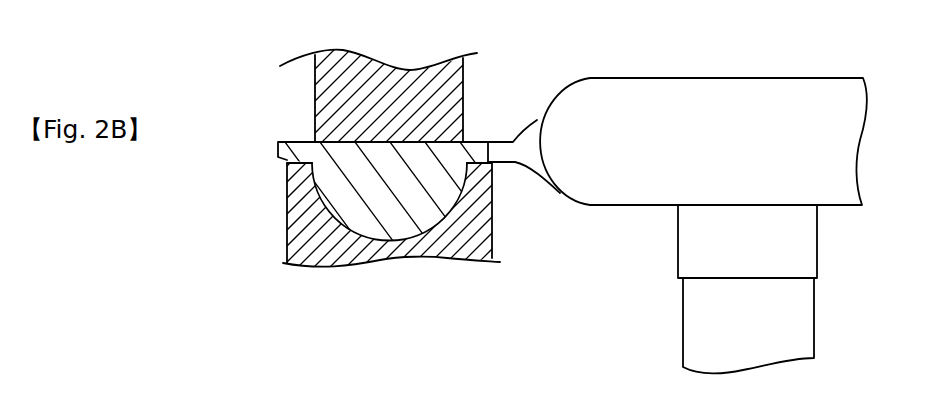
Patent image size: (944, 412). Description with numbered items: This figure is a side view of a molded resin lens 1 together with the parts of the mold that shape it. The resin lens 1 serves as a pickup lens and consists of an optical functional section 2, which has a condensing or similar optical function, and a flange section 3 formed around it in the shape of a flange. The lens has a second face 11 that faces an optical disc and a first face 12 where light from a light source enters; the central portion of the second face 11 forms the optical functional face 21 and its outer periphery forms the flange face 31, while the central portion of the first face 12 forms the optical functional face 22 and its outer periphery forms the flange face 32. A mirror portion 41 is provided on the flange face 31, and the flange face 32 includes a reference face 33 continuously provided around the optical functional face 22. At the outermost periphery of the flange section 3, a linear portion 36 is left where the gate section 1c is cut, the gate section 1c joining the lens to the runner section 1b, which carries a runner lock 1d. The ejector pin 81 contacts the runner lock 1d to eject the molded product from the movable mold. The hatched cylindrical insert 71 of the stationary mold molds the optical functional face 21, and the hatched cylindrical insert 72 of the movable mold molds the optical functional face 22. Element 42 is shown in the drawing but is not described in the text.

The resin lens 1 is at (279, 217).
The runner section 1b is at (789, 88).
The gate section 1c is at (513, 140).
The runner lock 1d is at (778, 241).
The optical functional section 2 is at (410, 235).
The flange section 3 is at (371, 188).
The second face 11 is at (377, 142).
The first face 12 is at (464, 274).
The optical functional face 21 is at (317, 140).
The optical functional face 22 is at (356, 266).
The flange face 31 is at (480, 163).
The flange face 32 is at (253, 213).
The reference face 33 is at (509, 233).
The linear portion 36 is at (550, 157).
The mirror portion 41 is at (252, 95).
The flange end 42 is at (241, 141).
The cylindrical insert 71 is at (423, 80).
The cylindrical insert 72 is at (308, 295).
The ejector pin 81 is at (779, 325).